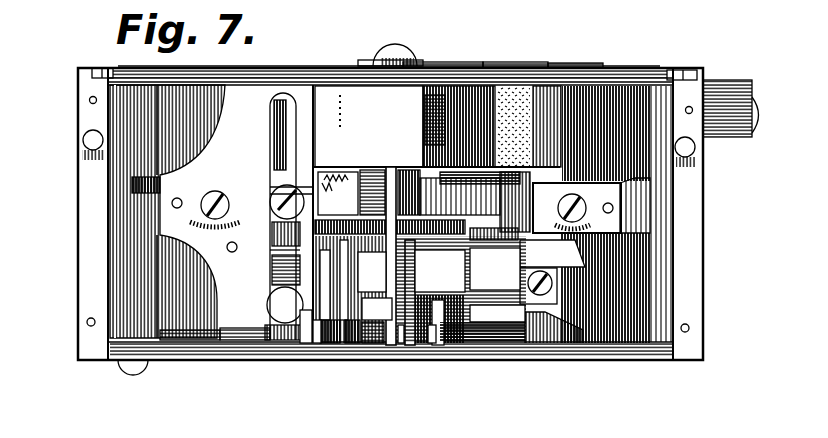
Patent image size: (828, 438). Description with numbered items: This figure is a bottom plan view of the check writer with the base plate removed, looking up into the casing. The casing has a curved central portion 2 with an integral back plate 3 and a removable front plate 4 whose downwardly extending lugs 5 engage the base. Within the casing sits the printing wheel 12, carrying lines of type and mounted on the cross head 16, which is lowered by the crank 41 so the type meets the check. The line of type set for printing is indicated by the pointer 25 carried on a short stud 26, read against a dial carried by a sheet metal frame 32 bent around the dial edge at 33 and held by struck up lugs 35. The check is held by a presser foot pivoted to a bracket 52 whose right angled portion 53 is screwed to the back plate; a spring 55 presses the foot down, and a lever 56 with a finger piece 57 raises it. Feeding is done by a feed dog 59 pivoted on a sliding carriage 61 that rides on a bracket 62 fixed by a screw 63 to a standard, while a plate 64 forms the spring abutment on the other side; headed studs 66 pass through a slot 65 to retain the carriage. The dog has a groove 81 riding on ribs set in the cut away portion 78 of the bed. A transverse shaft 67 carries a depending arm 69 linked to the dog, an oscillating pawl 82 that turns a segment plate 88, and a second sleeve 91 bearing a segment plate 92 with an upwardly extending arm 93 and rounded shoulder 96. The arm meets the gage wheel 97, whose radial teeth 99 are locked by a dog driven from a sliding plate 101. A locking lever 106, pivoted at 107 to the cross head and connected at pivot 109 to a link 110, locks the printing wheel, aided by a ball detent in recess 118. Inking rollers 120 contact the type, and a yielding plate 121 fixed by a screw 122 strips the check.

The curved central portion 2 is at (705, 224).
The back plate 3 is at (602, 362).
The removable front plate 4 is at (600, 78).
The downwardly extending lugs 5 is at (97, 70).
The printing wheel 12 is at (452, 125).
The cross head 16 is at (390, 233).
The pointer 25 is at (432, 62).
The short stud 26 is at (395, 50).
The frame 32 is at (520, 62).
The bent outer edge of frame 33 is at (577, 63).
The lugs 35 is at (585, 288).
The crank 41 is at (735, 130).
The bracket 52 is at (318, 348).
The right angled portion of bracket 53 is at (372, 346).
The spring 55 is at (377, 309).
The lever 56 is at (188, 344).
The finger piece 57 is at (128, 358).
The feed dog 59 is at (272, 231).
The sliding carriage 61 is at (274, 278).
The bracket 62 is at (232, 288).
The screw 63 is at (207, 198).
The plate 64 is at (603, 214).
The slot 65 is at (290, 125).
The headed studs 66 is at (272, 190).
The shaft 67 is at (518, 280).
The depending arm 69 is at (306, 326).
The cut away portion 78 is at (430, 192).
The groove 81 is at (272, 204).
The oscillating pawl 82 is at (338, 193).
The segment plate 88 is at (322, 346).
The second sleeve 91 is at (350, 289).
The segment plate 92 is at (352, 346).
The upwardly extending arm 93 is at (392, 345).
The shoulder 96 is at (349, 280).
The gage wheel 97 is at (470, 348).
The radial teeth 99 is at (445, 346).
The plate 101 is at (525, 210).
The locking lever 106 is at (385, 170).
The pivot 107 is at (456, 126).
The pivot 109 is at (461, 289).
The link 110 is at (408, 340).
The recess 118 is at (520, 322).
The inking rollers 120 is at (188, 82).
The yielding plate 121 is at (402, 348).
The screw 122 is at (433, 309).